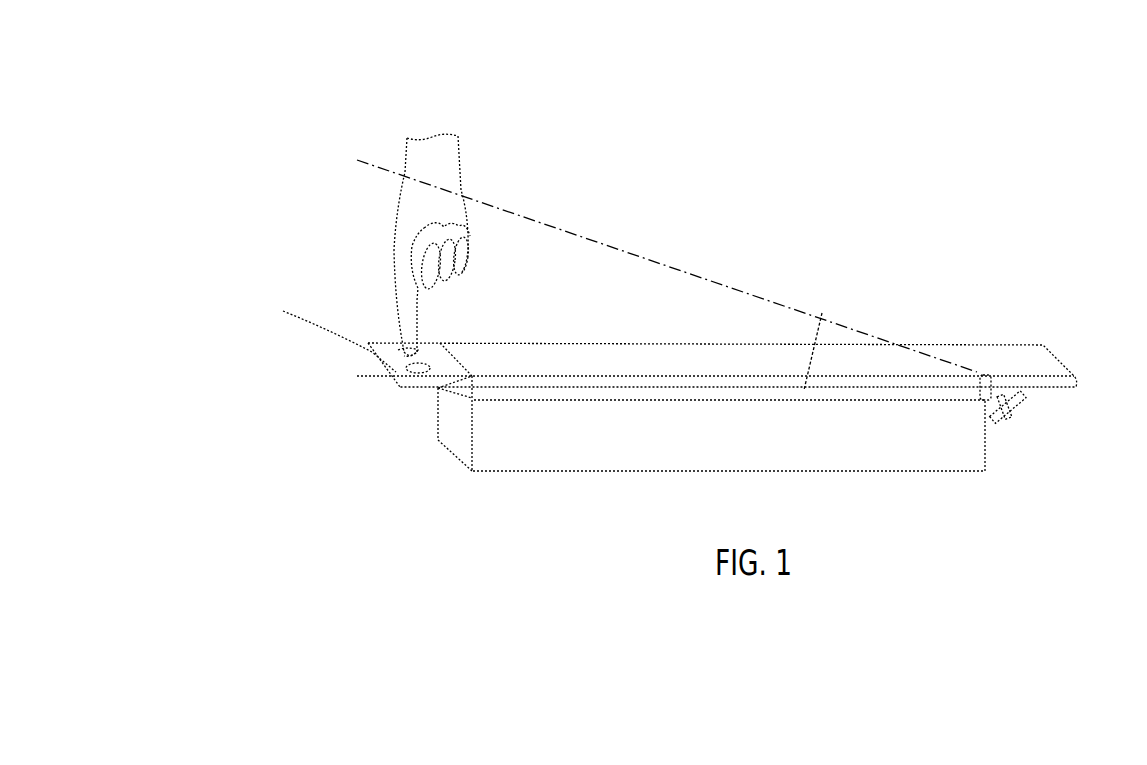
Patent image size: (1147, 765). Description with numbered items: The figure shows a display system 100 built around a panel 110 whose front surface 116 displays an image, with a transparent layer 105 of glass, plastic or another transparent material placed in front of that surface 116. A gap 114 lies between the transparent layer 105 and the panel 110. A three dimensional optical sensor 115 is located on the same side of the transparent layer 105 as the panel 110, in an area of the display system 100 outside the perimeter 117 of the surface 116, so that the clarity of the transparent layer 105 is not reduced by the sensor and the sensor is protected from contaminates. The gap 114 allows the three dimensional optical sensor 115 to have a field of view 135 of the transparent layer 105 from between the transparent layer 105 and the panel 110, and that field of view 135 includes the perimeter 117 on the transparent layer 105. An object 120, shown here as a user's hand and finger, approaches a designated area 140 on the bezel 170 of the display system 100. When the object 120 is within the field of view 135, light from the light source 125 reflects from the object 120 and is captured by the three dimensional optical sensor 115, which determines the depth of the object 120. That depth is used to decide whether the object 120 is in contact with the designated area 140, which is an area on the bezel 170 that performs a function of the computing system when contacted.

The display system 100 is at (1025, 82).
The transparent layer 105 is at (1053, 376).
The panel 110 is at (574, 472).
The gap 114 is at (658, 398).
The three dimensional optical sensor 115 is at (1018, 401).
The surface 116 is at (586, 398).
The perimeter 117 is at (446, 398).
The object 120 is at (420, 326).
The light source 125 is at (1003, 418).
The field of view 135 is at (808, 360).
The designated area 140 is at (368, 343).
The bezel 170 is at (380, 363).